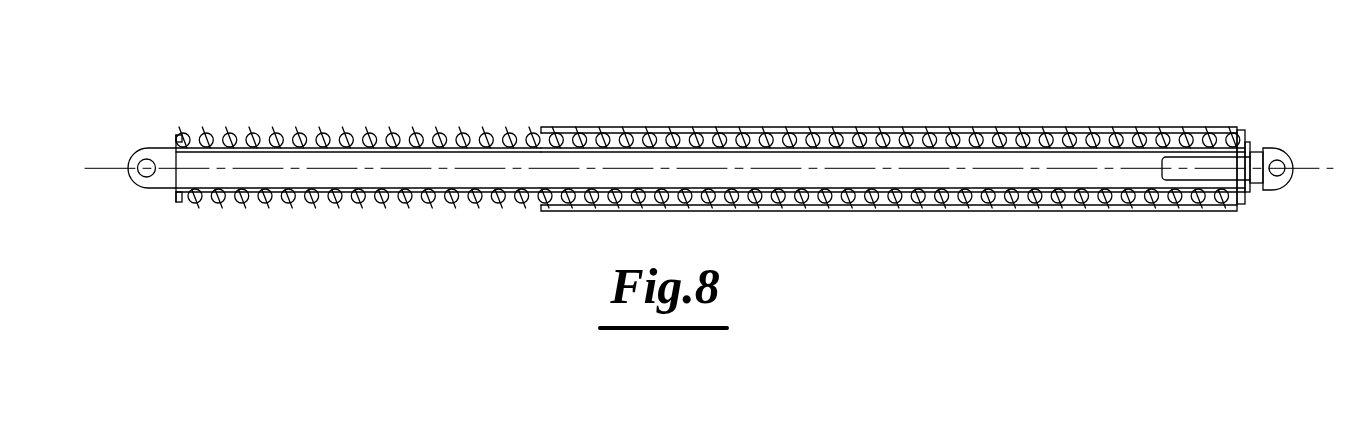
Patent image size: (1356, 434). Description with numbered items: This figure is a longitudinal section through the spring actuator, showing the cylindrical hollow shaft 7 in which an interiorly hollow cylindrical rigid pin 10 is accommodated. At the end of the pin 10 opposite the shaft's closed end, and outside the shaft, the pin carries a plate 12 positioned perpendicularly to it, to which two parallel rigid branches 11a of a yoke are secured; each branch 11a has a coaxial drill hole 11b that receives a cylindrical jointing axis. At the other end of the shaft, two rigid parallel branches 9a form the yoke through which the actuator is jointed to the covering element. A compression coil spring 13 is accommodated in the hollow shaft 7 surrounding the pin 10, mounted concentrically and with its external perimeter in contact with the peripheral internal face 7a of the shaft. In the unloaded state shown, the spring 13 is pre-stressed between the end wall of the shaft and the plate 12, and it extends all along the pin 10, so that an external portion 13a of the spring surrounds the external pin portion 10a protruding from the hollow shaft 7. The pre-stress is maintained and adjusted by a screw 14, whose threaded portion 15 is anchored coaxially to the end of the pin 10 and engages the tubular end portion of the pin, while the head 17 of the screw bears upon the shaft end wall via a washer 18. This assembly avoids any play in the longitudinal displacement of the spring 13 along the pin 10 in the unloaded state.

The cylindrical hollow shaft 7 is at (892, 127).
The peripheral internal face 7a is at (958, 133).
The branches of the yoke 9a is at (1278, 150).
The pin 10 is at (765, 146).
The external pin portion 10a is at (355, 165).
The branches of the yoke 11a is at (163, 152).
The drill holes 11b is at (146, 168).
The plate 12 is at (173, 196).
The spring 13 is at (710, 133).
The external portion of the spring 13a is at (253, 136).
The screw 14 is at (1276, 162).
The threaded portion 15 is at (1200, 176).
The head of the screw 17 is at (1258, 178).
The washer 18 is at (1244, 140).